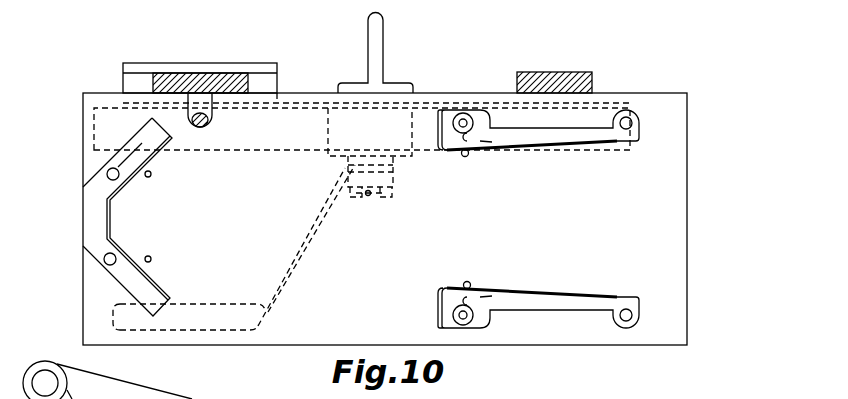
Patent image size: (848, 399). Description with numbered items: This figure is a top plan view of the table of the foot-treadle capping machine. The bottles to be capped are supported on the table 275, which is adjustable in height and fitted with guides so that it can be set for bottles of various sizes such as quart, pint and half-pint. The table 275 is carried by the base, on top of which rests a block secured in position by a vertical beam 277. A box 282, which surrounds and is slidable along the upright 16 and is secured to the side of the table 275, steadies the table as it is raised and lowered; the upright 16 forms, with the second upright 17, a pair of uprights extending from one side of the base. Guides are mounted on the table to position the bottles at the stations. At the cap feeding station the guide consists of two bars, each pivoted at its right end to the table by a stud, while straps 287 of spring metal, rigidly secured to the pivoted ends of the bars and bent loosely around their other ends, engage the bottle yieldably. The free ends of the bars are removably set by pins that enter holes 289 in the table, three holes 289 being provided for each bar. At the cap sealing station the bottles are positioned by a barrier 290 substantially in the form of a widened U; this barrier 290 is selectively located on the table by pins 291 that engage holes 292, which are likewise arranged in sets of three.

The table 275 is at (385, 219).
The box 282 is at (143, 68).
The upright 16 is at (208, 80).
The vertical beam 277 is at (383, 78).
The upright 17 is at (593, 83).
The strap 287 is at (485, 290).
The hole 289 is at (465, 282).
The barrier 290 is at (111, 222).
The pin 291 is at (104, 258).
The hole 292 is at (151, 258).